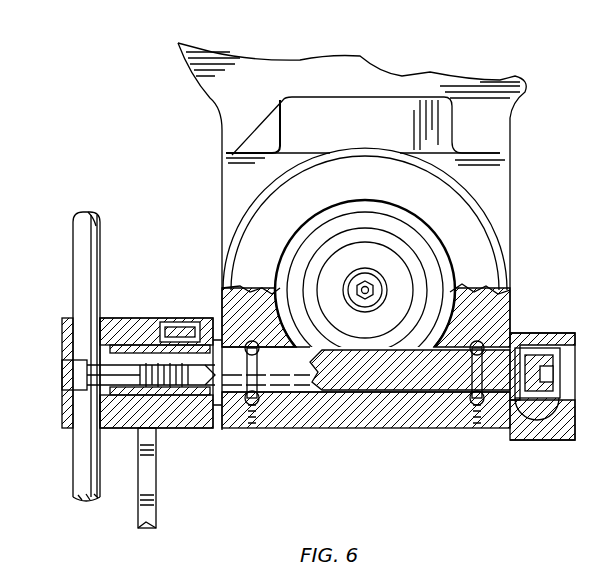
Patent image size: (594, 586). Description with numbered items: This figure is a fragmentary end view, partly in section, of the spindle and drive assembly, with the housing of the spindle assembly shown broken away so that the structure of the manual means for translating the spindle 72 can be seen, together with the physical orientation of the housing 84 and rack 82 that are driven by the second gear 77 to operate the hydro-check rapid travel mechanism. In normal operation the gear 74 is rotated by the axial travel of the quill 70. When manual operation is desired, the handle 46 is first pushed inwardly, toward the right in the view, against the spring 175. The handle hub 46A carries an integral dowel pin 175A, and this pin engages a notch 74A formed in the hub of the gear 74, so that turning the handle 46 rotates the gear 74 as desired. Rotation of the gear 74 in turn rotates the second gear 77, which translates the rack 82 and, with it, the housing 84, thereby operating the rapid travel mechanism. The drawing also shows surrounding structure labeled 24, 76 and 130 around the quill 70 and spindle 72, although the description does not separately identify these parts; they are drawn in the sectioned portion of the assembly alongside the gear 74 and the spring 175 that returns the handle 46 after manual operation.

The housing 24 is at (222, 110).
The handle 46 is at (93, 212).
The handle hub 46A is at (122, 430).
The quill 70 is at (300, 268).
The spindle 72 is at (335, 257).
The gear 74 is at (377, 410).
The notch 74A is at (256, 428).
The shaft 76 is at (358, 348).
The second gear 77 is at (536, 333).
The rack 82 is at (537, 440).
The housing 84 is at (518, 440).
The hub nut 130 is at (375, 283).
The spring 175 is at (150, 428).
The dowel pin 175A is at (180, 327).